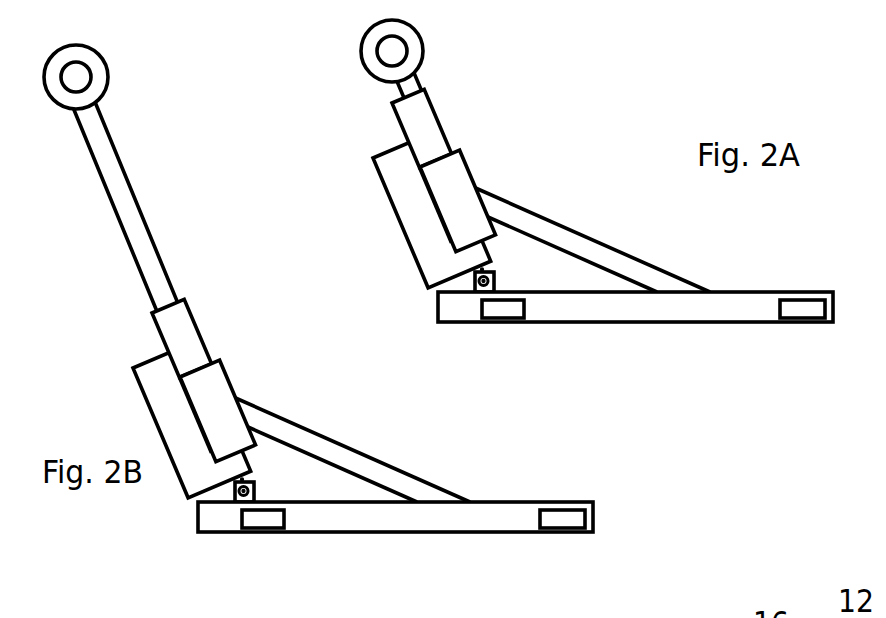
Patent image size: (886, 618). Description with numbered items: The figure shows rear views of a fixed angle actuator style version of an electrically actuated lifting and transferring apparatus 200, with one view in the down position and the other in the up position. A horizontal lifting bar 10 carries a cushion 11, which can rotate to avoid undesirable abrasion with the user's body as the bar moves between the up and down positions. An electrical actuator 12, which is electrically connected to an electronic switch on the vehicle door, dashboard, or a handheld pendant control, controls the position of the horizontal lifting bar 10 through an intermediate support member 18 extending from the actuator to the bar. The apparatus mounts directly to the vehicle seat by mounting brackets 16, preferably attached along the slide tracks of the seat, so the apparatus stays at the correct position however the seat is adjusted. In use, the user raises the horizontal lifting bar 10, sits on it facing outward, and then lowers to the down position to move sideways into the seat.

In FIG. 2A, the horizontal lifting bar 10 is at (392, 51).
In FIG. 2B, the horizontal lifting bar 10 is at (78, 80).
In FIG. 2A, the cushion 11 is at (372, 60).
In FIG. 2B, the cushion 11 is at (60, 90).
In FIG. 2A, the electrical actuator 12 is at (443, 257).
In FIG. 2B, the electrical actuator 12 is at (190, 467).
In FIG. 2A, the mounting brackets 16 is at (500, 312).
In FIG. 2B, the mounting brackets 16 is at (247, 515).
In FIG. 2A, the intermediate support member 18 is at (440, 243).
In FIG. 2B, the intermediate support member 18 is at (164, 357).
In FIG. 2A, the electrically actuated lifting and transferring apparatus 200 is at (754, 53).